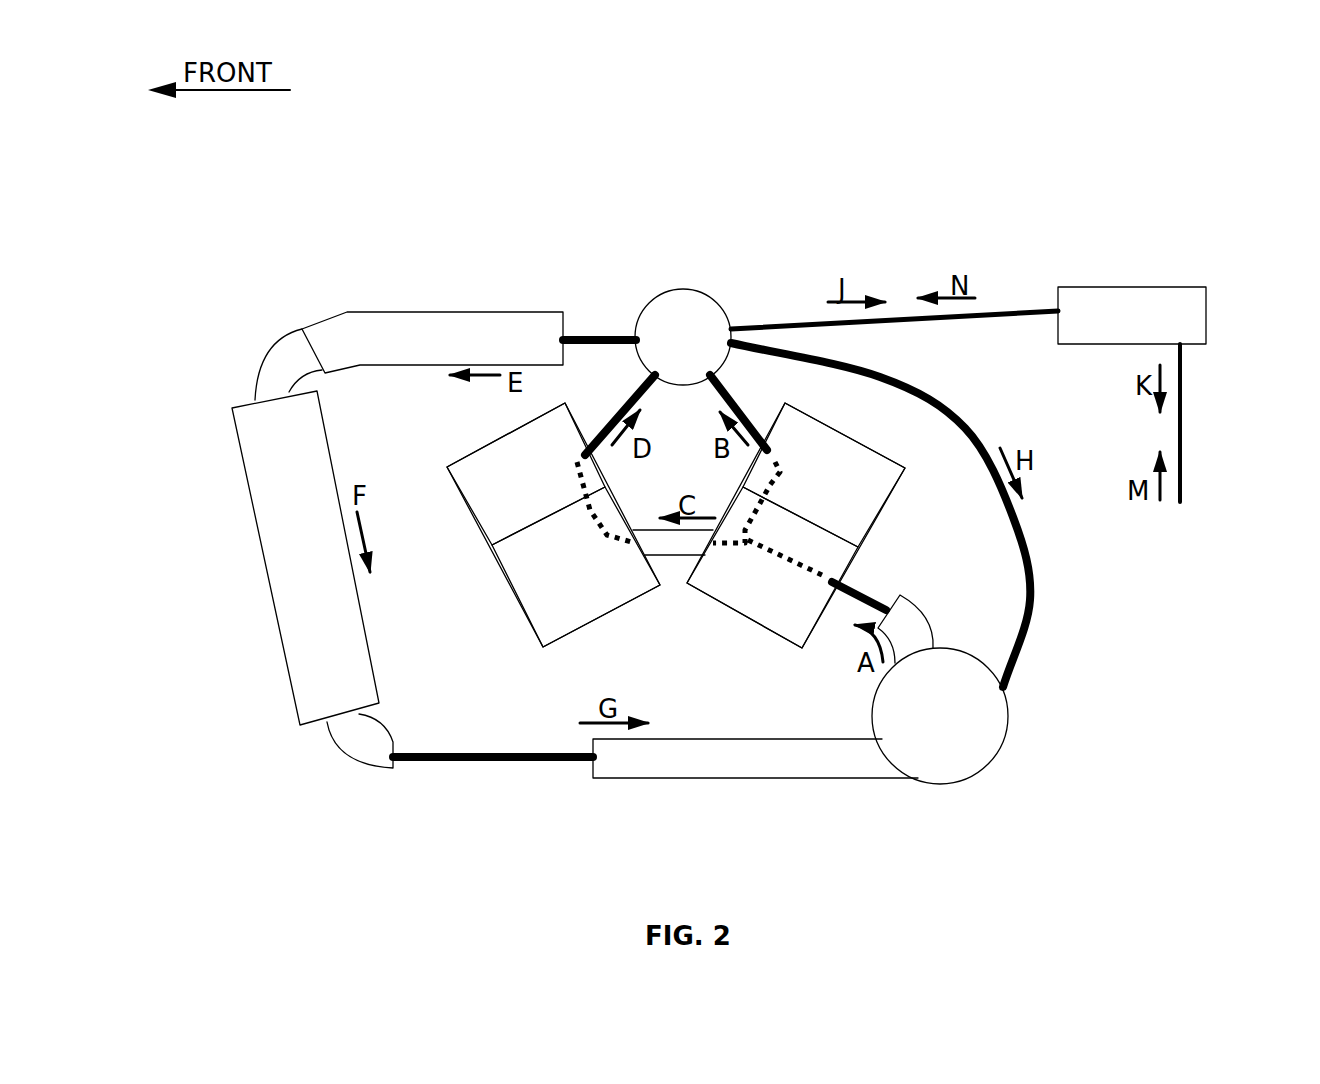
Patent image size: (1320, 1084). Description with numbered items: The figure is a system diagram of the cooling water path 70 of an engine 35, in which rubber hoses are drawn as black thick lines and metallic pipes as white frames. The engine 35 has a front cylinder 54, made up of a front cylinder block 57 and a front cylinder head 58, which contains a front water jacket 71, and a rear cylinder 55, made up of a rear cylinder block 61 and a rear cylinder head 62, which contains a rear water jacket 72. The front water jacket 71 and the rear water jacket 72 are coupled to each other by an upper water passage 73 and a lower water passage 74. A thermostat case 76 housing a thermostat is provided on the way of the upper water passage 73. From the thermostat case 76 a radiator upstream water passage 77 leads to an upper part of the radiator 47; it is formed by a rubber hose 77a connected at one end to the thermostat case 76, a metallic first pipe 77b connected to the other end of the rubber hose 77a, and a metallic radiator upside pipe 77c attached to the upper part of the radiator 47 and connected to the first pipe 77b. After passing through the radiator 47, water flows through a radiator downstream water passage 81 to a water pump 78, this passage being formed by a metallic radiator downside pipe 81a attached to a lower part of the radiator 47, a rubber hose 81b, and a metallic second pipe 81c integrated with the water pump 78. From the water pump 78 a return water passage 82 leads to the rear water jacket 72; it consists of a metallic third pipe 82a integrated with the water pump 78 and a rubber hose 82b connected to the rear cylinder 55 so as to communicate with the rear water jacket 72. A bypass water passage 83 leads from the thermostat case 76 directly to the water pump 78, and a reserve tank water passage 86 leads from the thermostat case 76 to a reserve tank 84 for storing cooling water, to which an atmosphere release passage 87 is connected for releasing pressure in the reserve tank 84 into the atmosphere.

The cooling water path 70 is at (218, 238).
The radiator upstream water passage 77 is at (412, 303).
The rubber hose 77a is at (602, 335).
The first pipe 77b is at (497, 322).
The radiator upside pipe 77c is at (272, 372).
The radiator 47 is at (270, 568).
The thermostat case 76 is at (683, 290).
The upper water passage 73 is at (620, 415).
The reserve tank water passage 86 is at (787, 318).
The reserve tank 84 is at (1143, 295).
The atmosphere release passage 87 is at (1183, 427).
The bypass water passage 83 is at (965, 428).
The engine 35 is at (435, 453).
The front cylinder 54 is at (603, 622).
The rear cylinder 55 is at (748, 625).
The front cylinder block 57 is at (520, 585).
The front cylinder head 58 is at (470, 505).
The rear cylinder block 61 is at (815, 640).
The rear cylinder head 62 is at (878, 495).
The lower water passage 74 is at (675, 555).
The front water jacket 71 is at (573, 472).
The rear water jacket 72 is at (783, 470).
The return water passage 82 is at (920, 605).
The third pipe 82a is at (925, 630).
The rubber hose 82b is at (862, 592).
The water pump 78 is at (980, 760).
The radiator downstream water passage 81 is at (640, 787).
The radiator downside pipe 81a is at (358, 748).
The rubber hose 81b is at (485, 762).
The second pipe 81c is at (755, 770).